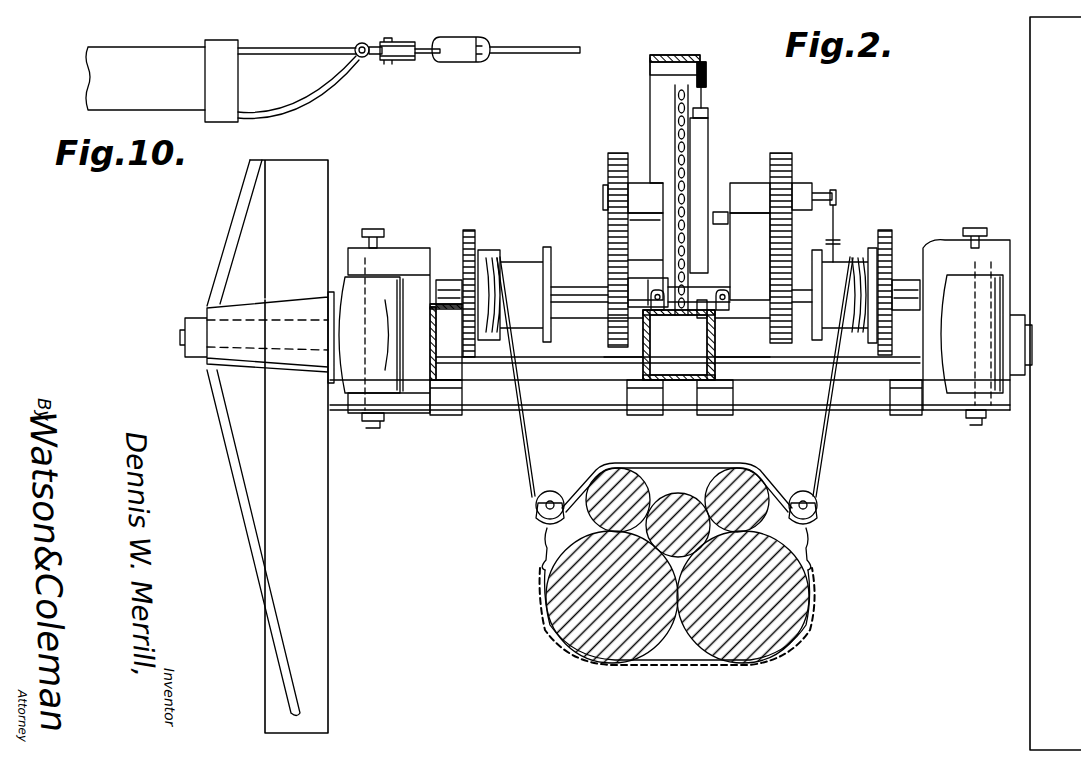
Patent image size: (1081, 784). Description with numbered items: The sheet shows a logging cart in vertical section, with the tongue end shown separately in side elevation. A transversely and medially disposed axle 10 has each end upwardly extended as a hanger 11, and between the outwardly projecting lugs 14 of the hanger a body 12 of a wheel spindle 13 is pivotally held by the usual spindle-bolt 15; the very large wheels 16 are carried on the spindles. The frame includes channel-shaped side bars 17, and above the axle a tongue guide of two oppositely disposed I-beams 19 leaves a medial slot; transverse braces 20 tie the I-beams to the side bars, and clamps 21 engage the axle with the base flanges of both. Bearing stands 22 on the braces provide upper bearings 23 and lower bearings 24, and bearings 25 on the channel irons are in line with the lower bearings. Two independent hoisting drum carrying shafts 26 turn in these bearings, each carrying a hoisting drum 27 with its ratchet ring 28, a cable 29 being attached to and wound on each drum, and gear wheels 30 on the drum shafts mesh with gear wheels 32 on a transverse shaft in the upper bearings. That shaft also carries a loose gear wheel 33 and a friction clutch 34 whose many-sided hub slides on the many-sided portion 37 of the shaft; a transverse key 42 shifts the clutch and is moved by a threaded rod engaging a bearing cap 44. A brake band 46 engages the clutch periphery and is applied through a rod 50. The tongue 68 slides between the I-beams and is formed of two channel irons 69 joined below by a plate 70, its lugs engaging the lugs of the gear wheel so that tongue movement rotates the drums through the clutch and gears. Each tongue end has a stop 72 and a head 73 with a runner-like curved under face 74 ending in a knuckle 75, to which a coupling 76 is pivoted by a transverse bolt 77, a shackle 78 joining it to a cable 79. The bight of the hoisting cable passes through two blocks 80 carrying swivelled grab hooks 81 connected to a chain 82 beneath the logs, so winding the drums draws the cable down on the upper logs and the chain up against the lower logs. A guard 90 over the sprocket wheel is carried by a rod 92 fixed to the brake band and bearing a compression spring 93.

In FIG. 2, the axle 10 is at (977, 325).
In FIG. 2, the hanger 11 is at (437, 250).
In FIG. 2, the body 12 is at (355, 333).
In FIG. 2, the wheel spindle 13 is at (183, 360).
In FIG. 2, the lugs 14 is at (380, 253).
In FIG. 2, the spindle-bolt 15 is at (371, 428).
In FIG. 2, the wheels 16 is at (328, 524).
In FIG. 2, the side bars 17 is at (490, 360).
In FIG. 2, the I-beams 19 is at (642, 370).
In FIG. 2, the transverse braces 20 is at (568, 352).
In FIG. 2, the clamps 21 is at (445, 416).
In FIG. 2, the bearing stands 22 is at (633, 228).
In FIG. 2, the upper bearings 23 is at (636, 183).
In FIG. 2, the lower bearings 24 is at (660, 285).
In FIG. 2, the bearings 25 is at (448, 280).
In FIG. 2, the hoisting drum carrying shafts 26 is at (580, 298).
In FIG. 2, the hoisting drum 27 is at (515, 262).
In FIG. 2, the ratchet ring 28 is at (470, 230).
In FIG. 2, the cable 29 is at (533, 452).
In FIG. 2, the gear wheels 30 is at (622, 341).
In FIG. 2, the gear wheels 32 is at (608, 160).
In FIG. 2, the loose gear wheel 33 is at (675, 118).
In FIG. 2, the friction clutch 34 is at (708, 128).
In FIG. 2, the many-sided portion 37 is at (603, 194).
In FIG. 2, the transverse key 42 is at (718, 224).
In FIG. 2, the bearing cap 44 is at (810, 186).
In FIG. 2, the brake band 46 is at (710, 112).
In FIG. 2, the rod 50 is at (697, 308).
In FIG. 10, the tongue 68 is at (133, 50).
In FIG. 2, the tongue 68 is at (653, 350).
In FIG. 2, the channel irons 69 is at (690, 323).
In FIG. 2, the plate 70 is at (678, 380).
In FIG. 10, the stops 72 is at (222, 118).
In FIG. 10, the heads 73 is at (320, 92).
In FIG. 10, the curved under face 74 is at (292, 110).
In FIG. 10, the knuckle 75 is at (364, 44).
In FIG. 10, the coupling 76 is at (389, 58).
In FIG. 10, the transverse bolt 77 is at (362, 58).
In FIG. 10, the shackle 78 is at (405, 40).
In FIG. 10, the cable 79 is at (528, 46).
In FIG. 2, the blocks 80 is at (540, 520).
In FIG. 2, the grab hooks 81 is at (540, 556).
In FIG. 2, the chain 82 is at (545, 630).
In FIG. 2, the guard 90 is at (664, 55).
In FIG. 2, the rod 92 is at (706, 66).
In FIG. 2, the compression spring 93 is at (650, 73).